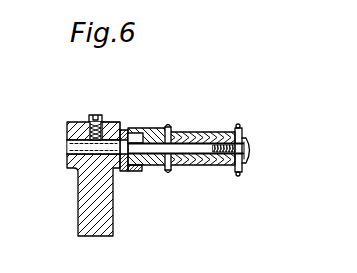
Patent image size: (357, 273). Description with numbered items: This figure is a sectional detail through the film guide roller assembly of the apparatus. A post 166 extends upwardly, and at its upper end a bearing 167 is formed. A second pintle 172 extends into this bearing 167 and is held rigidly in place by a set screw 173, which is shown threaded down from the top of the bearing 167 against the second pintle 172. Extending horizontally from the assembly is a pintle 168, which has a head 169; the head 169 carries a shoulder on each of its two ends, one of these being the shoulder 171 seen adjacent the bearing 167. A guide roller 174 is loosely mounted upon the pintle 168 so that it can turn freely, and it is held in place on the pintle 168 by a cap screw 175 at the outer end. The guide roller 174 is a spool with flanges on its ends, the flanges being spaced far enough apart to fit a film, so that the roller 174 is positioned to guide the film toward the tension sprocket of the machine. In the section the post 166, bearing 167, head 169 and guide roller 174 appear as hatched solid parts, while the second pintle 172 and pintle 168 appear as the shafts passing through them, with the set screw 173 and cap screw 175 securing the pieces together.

The post 166 is at (78, 203).
The bearing 167 is at (110, 128).
The pintle 168 is at (187, 138).
The head 169 is at (137, 168).
The shoulder 171 is at (130, 168).
The second pintle 172 is at (68, 147).
The set screw 173 is at (92, 116).
The guide roller 174 is at (194, 162).
The cap screw 175 is at (247, 141).